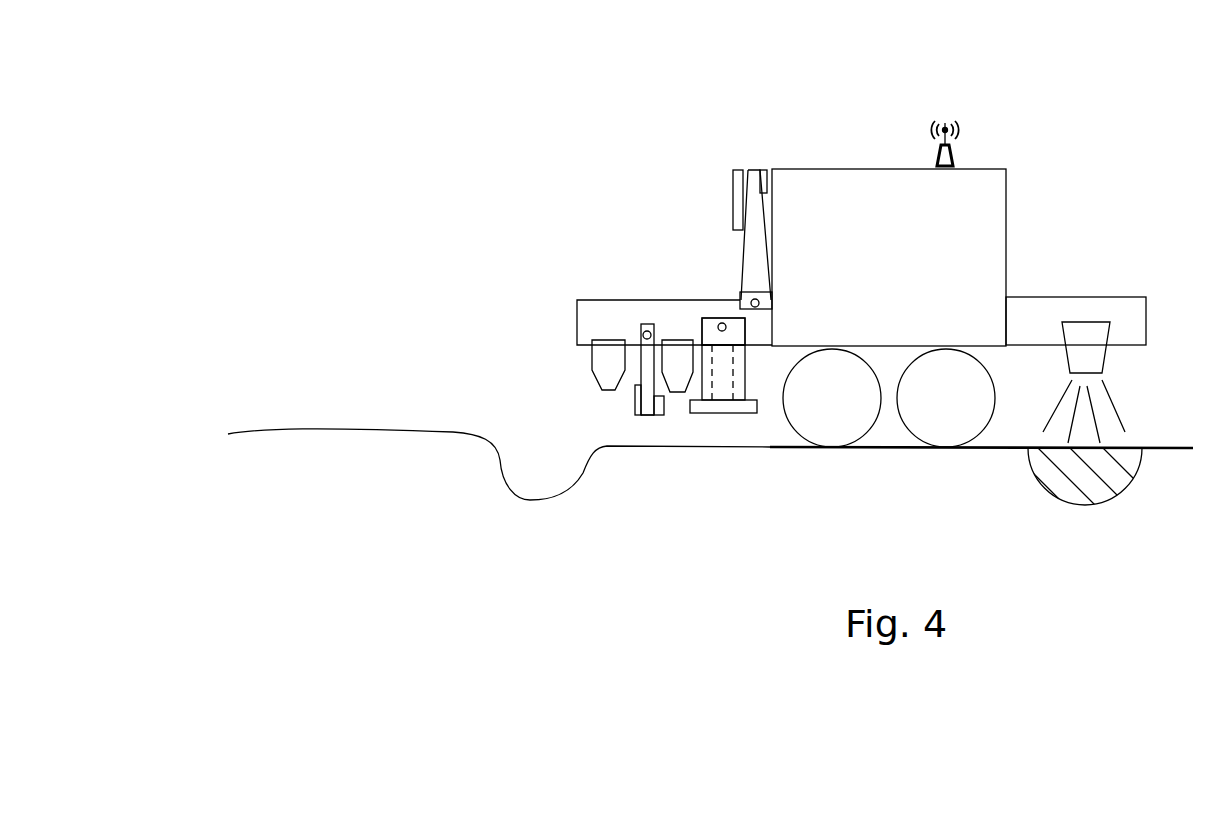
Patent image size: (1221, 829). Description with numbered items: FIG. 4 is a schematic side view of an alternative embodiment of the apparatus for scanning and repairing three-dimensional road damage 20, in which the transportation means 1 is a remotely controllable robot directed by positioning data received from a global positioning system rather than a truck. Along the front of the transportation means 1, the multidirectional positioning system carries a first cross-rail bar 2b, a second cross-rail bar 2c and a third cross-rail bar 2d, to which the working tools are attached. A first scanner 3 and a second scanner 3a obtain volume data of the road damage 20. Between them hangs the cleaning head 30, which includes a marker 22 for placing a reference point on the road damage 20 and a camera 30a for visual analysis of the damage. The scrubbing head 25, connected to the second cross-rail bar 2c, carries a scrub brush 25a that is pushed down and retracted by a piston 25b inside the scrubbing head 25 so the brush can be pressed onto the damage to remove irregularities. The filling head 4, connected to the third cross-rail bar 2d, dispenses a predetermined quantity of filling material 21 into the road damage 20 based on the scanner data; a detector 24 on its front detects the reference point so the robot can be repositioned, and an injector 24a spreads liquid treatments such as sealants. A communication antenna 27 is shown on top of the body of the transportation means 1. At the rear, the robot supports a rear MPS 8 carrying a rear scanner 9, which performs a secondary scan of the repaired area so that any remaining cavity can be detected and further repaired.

The transportation means 1 is at (936, 258).
The first cross-rail bar 2b is at (642, 323).
The second cross-rail bar 2c is at (708, 317).
The third cross-rail bar 2d is at (740, 297).
The first scanner 3 is at (588, 372).
The second scanner 3a is at (673, 338).
The filling head 4 is at (745, 168).
The rear MPS 8 is at (1146, 310).
The rear scanner 9 is at (1102, 362).
The three-dimensional road damage 20 is at (533, 503).
The filling material 21 is at (1125, 490).
The marker 22 is at (635, 408).
The detector 24 is at (763, 167).
The injector 24a is at (737, 172).
The scrubbing head 25 is at (745, 318).
The scrub brush 25a is at (720, 413).
The piston 25b is at (745, 370).
The antenna 27 is at (955, 156).
The cleaning head 30 is at (647, 415).
The camera 30a is at (668, 415).